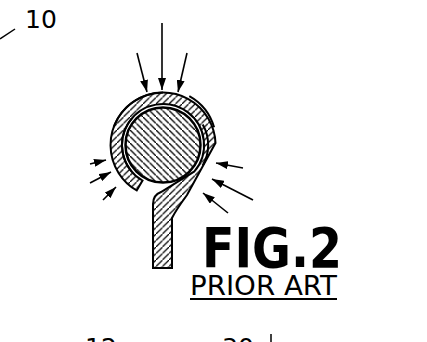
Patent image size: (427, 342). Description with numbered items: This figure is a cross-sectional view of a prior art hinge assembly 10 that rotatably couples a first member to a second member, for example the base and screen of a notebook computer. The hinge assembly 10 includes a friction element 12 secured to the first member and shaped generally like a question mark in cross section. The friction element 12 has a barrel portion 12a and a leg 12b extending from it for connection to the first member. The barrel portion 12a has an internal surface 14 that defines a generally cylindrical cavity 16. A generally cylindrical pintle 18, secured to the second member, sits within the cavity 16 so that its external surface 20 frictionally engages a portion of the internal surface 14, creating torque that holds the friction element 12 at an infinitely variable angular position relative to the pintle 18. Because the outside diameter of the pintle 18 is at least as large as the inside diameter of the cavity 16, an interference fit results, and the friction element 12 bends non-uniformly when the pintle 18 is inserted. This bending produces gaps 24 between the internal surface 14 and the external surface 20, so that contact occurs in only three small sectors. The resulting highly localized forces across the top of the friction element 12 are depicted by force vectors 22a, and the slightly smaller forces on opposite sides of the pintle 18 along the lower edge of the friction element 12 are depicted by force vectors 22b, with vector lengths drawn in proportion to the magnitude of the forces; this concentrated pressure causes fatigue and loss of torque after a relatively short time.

The hinge assembly 10 is at (15, 29).
The friction element 12 is at (215, 140).
The barrel portion 12a is at (152, 235).
The leg 12b is at (200, 100).
The internal surface 14 is at (205, 114).
The cylindrical cavity 16 is at (121, 115).
The pintle 18 is at (115, 135).
The external surface 20 is at (134, 105).
The force vectors 22a is at (162, 27).
The force vectors 22b is at (83, 185).
The gaps 24 is at (120, 146).